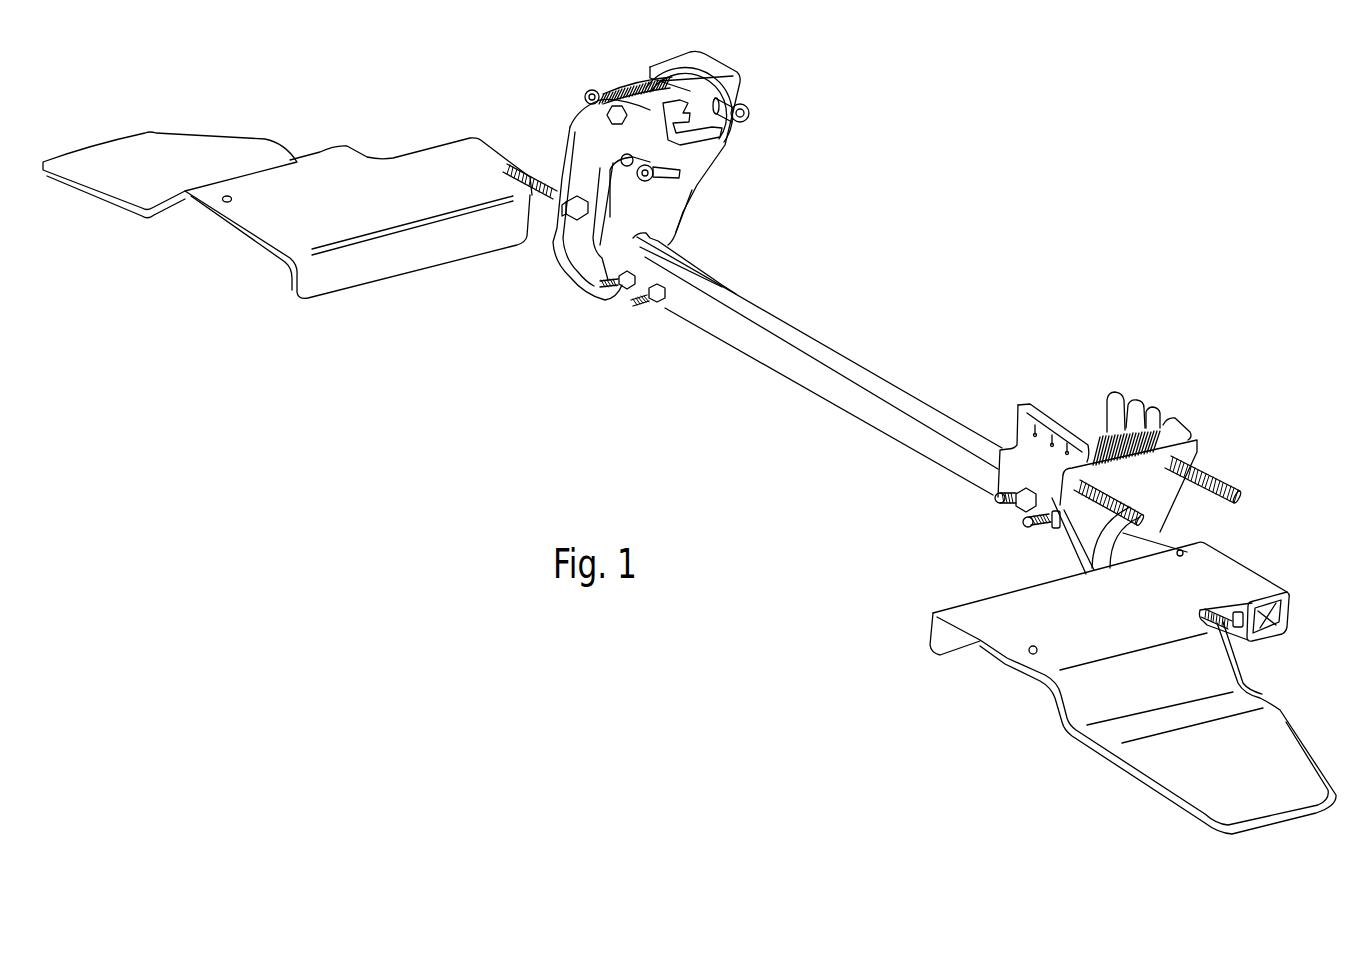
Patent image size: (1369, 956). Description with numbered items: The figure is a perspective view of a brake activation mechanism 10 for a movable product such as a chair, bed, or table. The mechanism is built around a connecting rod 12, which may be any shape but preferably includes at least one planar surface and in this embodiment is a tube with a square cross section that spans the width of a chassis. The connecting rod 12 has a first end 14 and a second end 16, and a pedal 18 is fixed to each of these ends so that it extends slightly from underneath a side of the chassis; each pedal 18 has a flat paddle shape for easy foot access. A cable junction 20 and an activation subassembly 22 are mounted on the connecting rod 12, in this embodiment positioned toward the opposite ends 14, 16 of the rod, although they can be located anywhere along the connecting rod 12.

The brake activation mechanism 10 is at (1000, 185).
The connecting rod 12 is at (830, 358).
The first end 14 is at (537, 230).
The second end 16 is at (1240, 640).
The pedal 18 is at (148, 150).
The cable junction 20 is at (1216, 401).
The activation subassembly 22 is at (756, 55).